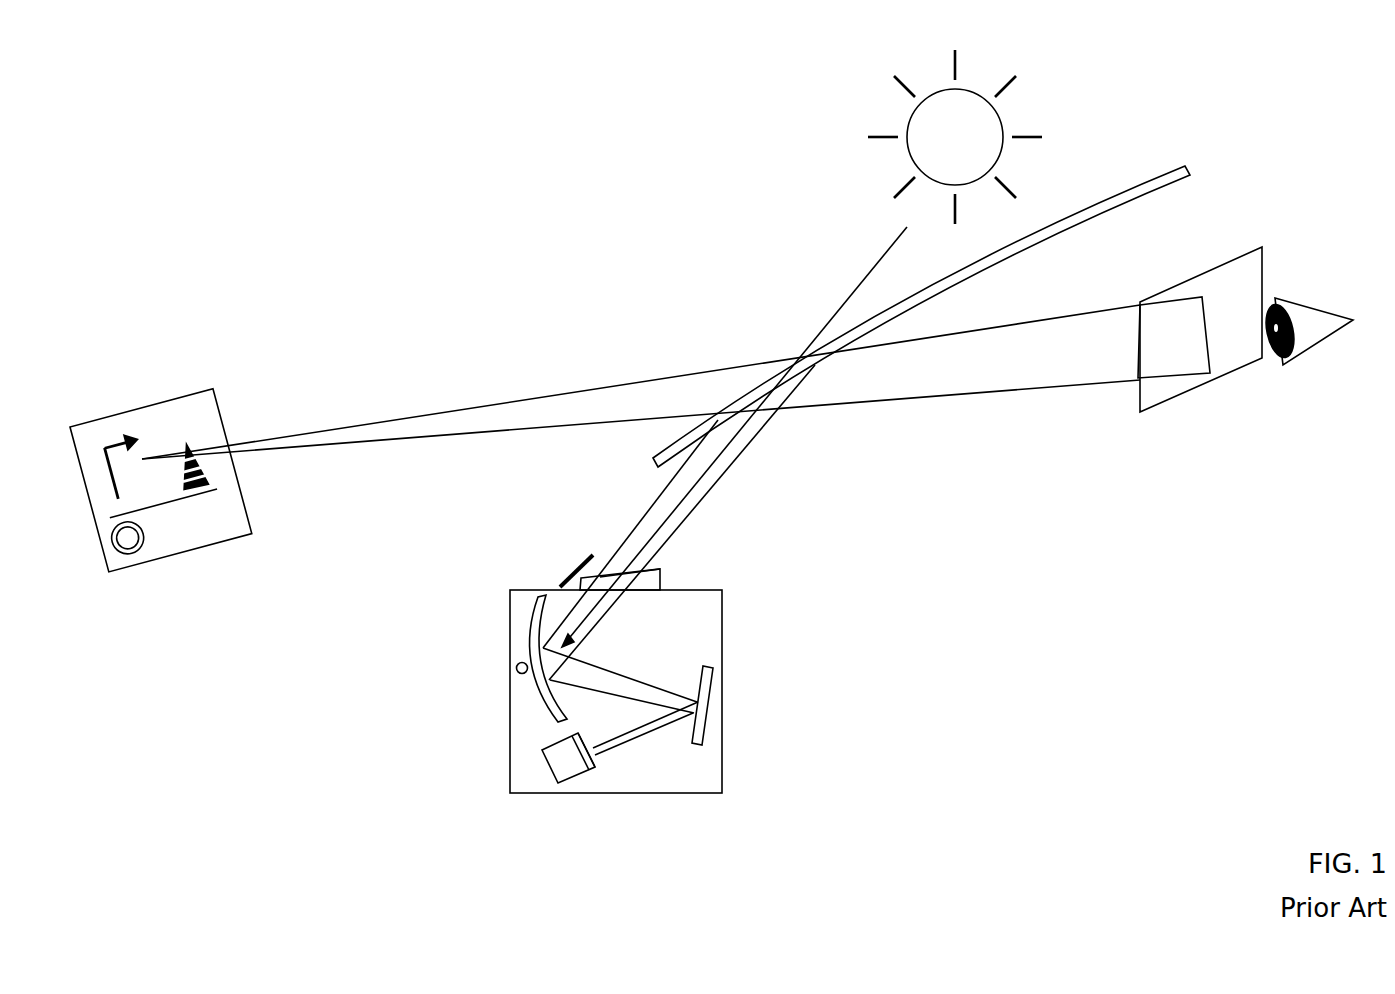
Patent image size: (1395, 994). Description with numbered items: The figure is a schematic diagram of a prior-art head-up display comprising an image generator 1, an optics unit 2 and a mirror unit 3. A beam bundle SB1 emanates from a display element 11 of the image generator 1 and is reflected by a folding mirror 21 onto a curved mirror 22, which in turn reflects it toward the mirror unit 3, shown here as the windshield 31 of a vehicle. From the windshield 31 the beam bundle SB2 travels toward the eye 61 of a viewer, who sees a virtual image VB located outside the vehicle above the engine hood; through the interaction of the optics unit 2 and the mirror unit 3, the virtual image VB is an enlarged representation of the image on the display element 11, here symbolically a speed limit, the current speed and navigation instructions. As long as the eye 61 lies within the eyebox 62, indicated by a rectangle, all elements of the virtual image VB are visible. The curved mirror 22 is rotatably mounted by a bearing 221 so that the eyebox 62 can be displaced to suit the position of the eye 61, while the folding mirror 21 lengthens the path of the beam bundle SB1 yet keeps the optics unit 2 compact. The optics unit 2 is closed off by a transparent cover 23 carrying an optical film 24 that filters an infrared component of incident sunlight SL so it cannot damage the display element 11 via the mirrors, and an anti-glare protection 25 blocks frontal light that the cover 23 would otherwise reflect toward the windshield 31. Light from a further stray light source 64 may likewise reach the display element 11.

The image generator 1 is at (541, 758).
The display element 11 is at (593, 786).
The optics unit 2 is at (722, 620).
The folding mirror 21 is at (714, 700).
The curved mirror 22 is at (537, 617).
The bearing 221 is at (514, 666).
The transparent cover 23 is at (664, 573).
The optical film 24 is at (657, 552).
The anti-glare protection 25 is at (572, 566).
The mirror unit 3 is at (921, 316).
The windshield 31 is at (903, 305).
The eye 61 is at (1313, 308).
The eyebox 62 is at (1157, 403).
The stray light source 64 is at (912, 128).
The sunlight SL is at (815, 335).
The beam bundle SB1 is at (647, 735).
The beam bundle SB2 is at (988, 372).
The virtual image VB is at (92, 515).